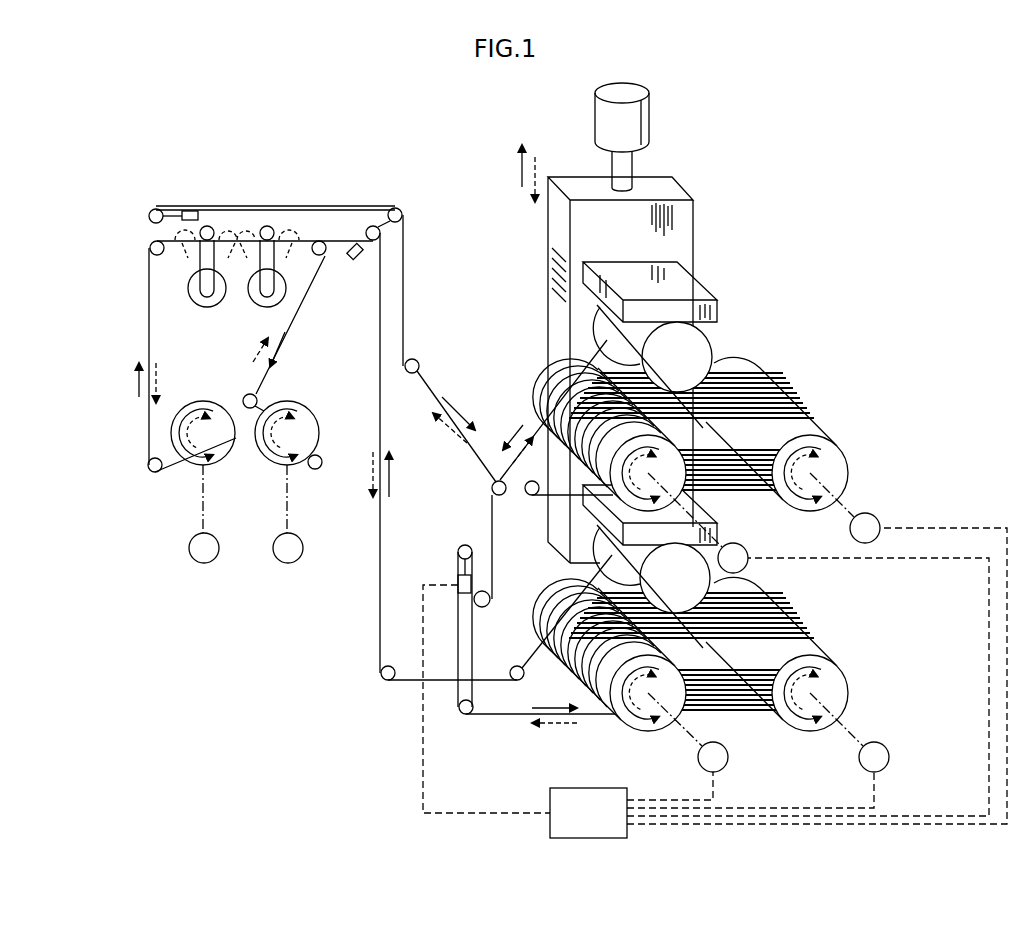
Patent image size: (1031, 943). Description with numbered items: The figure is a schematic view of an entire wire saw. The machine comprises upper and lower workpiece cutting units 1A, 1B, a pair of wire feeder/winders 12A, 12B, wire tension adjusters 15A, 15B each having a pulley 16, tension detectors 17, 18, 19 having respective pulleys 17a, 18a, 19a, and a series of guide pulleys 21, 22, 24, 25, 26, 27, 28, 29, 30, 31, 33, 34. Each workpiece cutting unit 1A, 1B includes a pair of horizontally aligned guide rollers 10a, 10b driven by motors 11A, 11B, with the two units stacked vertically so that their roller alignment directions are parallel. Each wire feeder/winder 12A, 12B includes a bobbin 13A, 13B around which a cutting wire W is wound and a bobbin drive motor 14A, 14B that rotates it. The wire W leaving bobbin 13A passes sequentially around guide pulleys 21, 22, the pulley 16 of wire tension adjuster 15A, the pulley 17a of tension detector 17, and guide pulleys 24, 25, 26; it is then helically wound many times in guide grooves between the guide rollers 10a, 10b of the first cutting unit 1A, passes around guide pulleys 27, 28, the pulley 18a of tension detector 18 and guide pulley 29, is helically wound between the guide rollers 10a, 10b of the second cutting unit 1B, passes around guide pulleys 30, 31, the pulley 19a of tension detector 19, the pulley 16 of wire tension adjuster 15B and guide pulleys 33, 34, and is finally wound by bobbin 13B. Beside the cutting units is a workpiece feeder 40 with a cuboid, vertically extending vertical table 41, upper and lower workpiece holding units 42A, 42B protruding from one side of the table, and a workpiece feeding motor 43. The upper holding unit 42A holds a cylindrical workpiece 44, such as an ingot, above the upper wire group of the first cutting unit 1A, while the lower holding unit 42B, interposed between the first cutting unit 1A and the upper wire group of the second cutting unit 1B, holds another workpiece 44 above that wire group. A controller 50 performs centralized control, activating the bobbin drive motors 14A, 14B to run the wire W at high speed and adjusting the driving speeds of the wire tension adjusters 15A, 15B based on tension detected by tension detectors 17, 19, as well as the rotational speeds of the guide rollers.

The upper workpiece cutting unit 1A is at (800, 380).
The lower workpiece cutting unit 1B is at (800, 603).
The guide roller 10a is at (700, 497).
The guide roller 10b is at (842, 450).
The motor 11A is at (748, 555).
The motor 11B is at (878, 520).
The wire feeder/winder 12A is at (185, 464).
The wire feeder/winder 12B is at (300, 467).
The bobbin 13A is at (228, 442).
The bobbin 13B is at (270, 455).
The bobbin drive motor 14A is at (204, 564).
The bobbin drive motor 14B is at (288, 564).
The wire tension adjuster 15A is at (190, 296).
The wire tension adjuster 15B is at (250, 296).
The pulley 16 is at (267, 225).
The tension detector 17 is at (188, 210).
The pulley 17a is at (152, 211).
The tension detector 18 is at (458, 583).
The pulley 18a is at (458, 549).
The tension detector 19 is at (355, 262).
The pulley 19a is at (381, 234).
The guide pulley 21 is at (148, 466).
The guide pulley 22 is at (149, 250).
The guide pulley 24 is at (401, 210).
The guide pulley 25 is at (418, 360).
The guide pulley 26 is at (530, 496).
The guide pulley 27 is at (492, 488).
The guide pulley 28 is at (482, 608).
The guide pulley 29 is at (466, 715).
The guide pulley 30 is at (517, 665).
The guide pulley 31 is at (381, 674).
The guide pulley 33 is at (322, 256).
The guide pulley 34 is at (244, 397).
The workpiece feeder 40 is at (641, 325).
The vertical table 41 is at (690, 222).
The upper workpiece holding unit 42A is at (718, 292).
The lower workpiece holding unit 42B is at (612, 527).
The workpiece feeding motor 43 is at (650, 104).
The workpiece 44 is at (708, 348).
The controller 50 is at (590, 788).
The cutting wire W is at (315, 205).